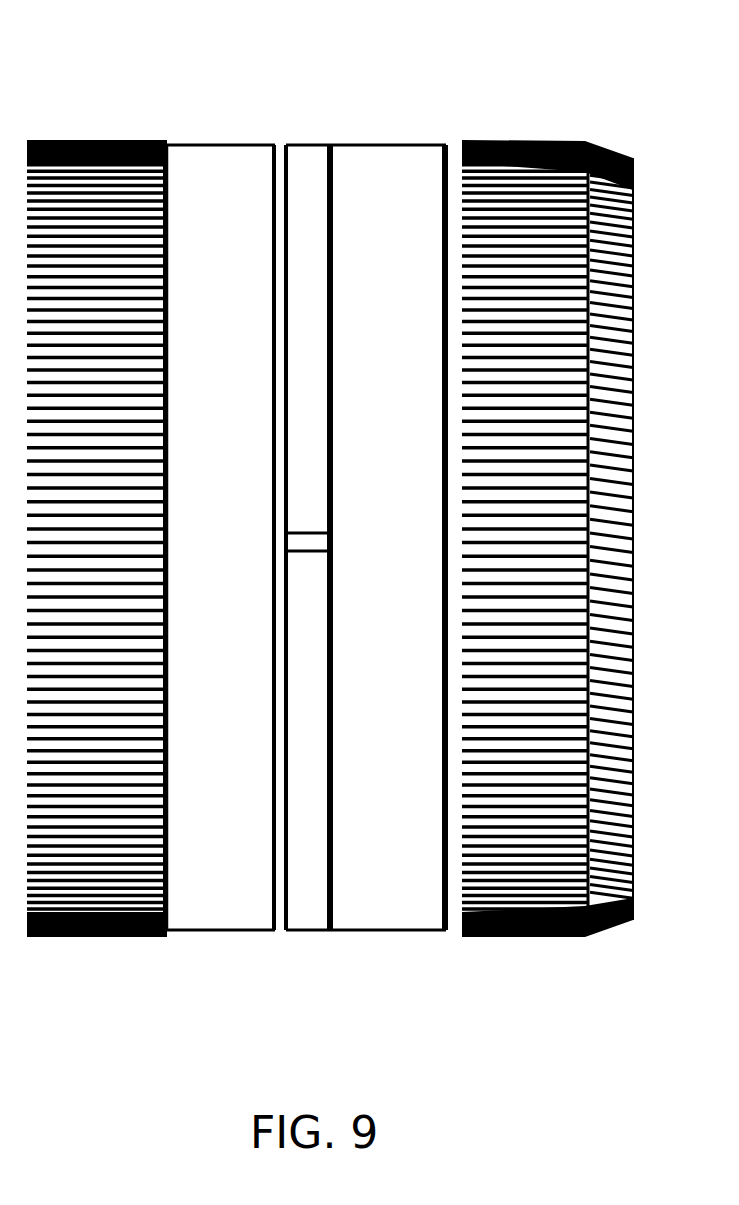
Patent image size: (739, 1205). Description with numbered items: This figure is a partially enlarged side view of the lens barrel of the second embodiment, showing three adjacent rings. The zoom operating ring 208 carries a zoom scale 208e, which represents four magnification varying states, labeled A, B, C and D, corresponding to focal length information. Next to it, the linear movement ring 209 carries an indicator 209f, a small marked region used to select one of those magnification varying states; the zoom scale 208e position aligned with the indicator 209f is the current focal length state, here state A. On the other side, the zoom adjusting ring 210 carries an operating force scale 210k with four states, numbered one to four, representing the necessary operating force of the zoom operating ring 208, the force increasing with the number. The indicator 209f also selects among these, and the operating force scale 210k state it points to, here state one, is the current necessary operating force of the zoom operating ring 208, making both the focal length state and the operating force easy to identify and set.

The zoom operating ring 208 is at (236, 230).
The zoom scale 208e is at (220, 410).
The linear movement ring 209 is at (300, 215).
The indicator 209f is at (305, 555).
The zoom adjusting ring 210 is at (395, 235).
The operating force scale 210k is at (378, 677).